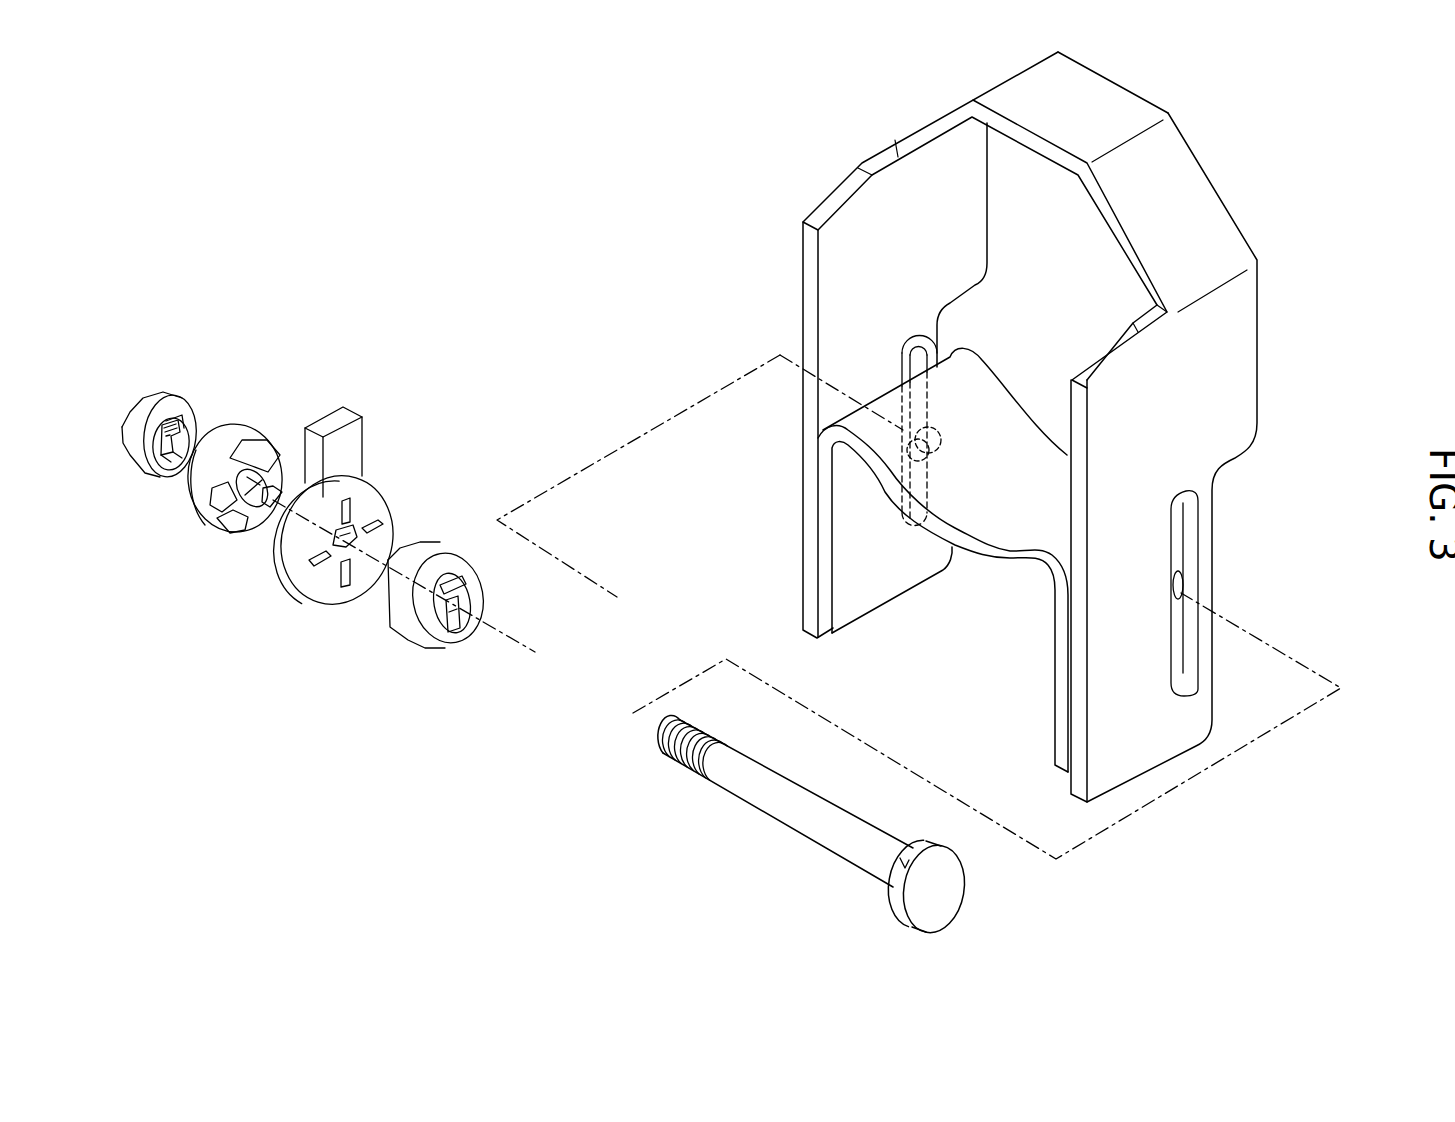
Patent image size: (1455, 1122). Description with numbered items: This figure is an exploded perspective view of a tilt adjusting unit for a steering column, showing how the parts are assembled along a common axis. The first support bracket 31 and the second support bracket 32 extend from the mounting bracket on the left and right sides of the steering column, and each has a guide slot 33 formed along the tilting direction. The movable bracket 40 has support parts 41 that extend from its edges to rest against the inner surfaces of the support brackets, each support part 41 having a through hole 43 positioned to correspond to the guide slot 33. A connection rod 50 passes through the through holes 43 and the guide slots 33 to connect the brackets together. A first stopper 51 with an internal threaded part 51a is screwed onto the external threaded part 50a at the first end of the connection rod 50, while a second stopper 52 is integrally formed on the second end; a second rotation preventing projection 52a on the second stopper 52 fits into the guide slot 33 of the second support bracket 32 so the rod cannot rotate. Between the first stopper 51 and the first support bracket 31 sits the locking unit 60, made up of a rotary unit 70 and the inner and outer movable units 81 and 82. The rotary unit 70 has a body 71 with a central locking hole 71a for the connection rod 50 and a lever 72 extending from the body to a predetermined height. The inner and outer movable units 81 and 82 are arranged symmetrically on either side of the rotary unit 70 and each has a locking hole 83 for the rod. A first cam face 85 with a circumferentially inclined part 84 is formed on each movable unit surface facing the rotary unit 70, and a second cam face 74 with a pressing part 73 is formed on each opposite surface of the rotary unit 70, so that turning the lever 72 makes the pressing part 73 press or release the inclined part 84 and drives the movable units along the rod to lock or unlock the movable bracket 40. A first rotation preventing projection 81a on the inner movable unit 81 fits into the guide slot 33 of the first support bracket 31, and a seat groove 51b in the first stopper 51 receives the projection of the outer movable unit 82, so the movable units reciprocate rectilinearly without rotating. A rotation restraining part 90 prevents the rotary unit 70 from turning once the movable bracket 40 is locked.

The first support bracket 31 is at (862, 217).
The second support bracket 32 is at (1138, 752).
The guide slot 33 is at (1190, 530).
The movable bracket 40 is at (975, 512).
The support part 41 is at (852, 606).
The through hole 43 is at (950, 450).
The connection rod 50 is at (780, 818).
The external threaded part 50a is at (682, 765).
The second stopper 52 is at (895, 908).
The second rotation preventing projection 52a is at (904, 856).
The first stopper 51 is at (150, 393).
The internal threaded part 51a is at (192, 400).
The seat groove 51b is at (170, 473).
The locking unit 60 is at (320, 545).
The rotary unit 70 is at (352, 531).
The body 71 is at (283, 547).
The locking hole 71a is at (341, 548).
The lever 72 is at (362, 430).
The pressing part 73 is at (372, 477).
The second cam face 74 is at (383, 507).
The inner movable unit 81 is at (445, 553).
The first rotation preventing projection 81a is at (463, 583).
The outer movable unit 82 is at (245, 430).
The locking hole 83 is at (447, 637).
The inclined part 84 is at (220, 528).
The first cam face 85 is at (283, 499).
The rotation restraining part 90 is at (247, 423).